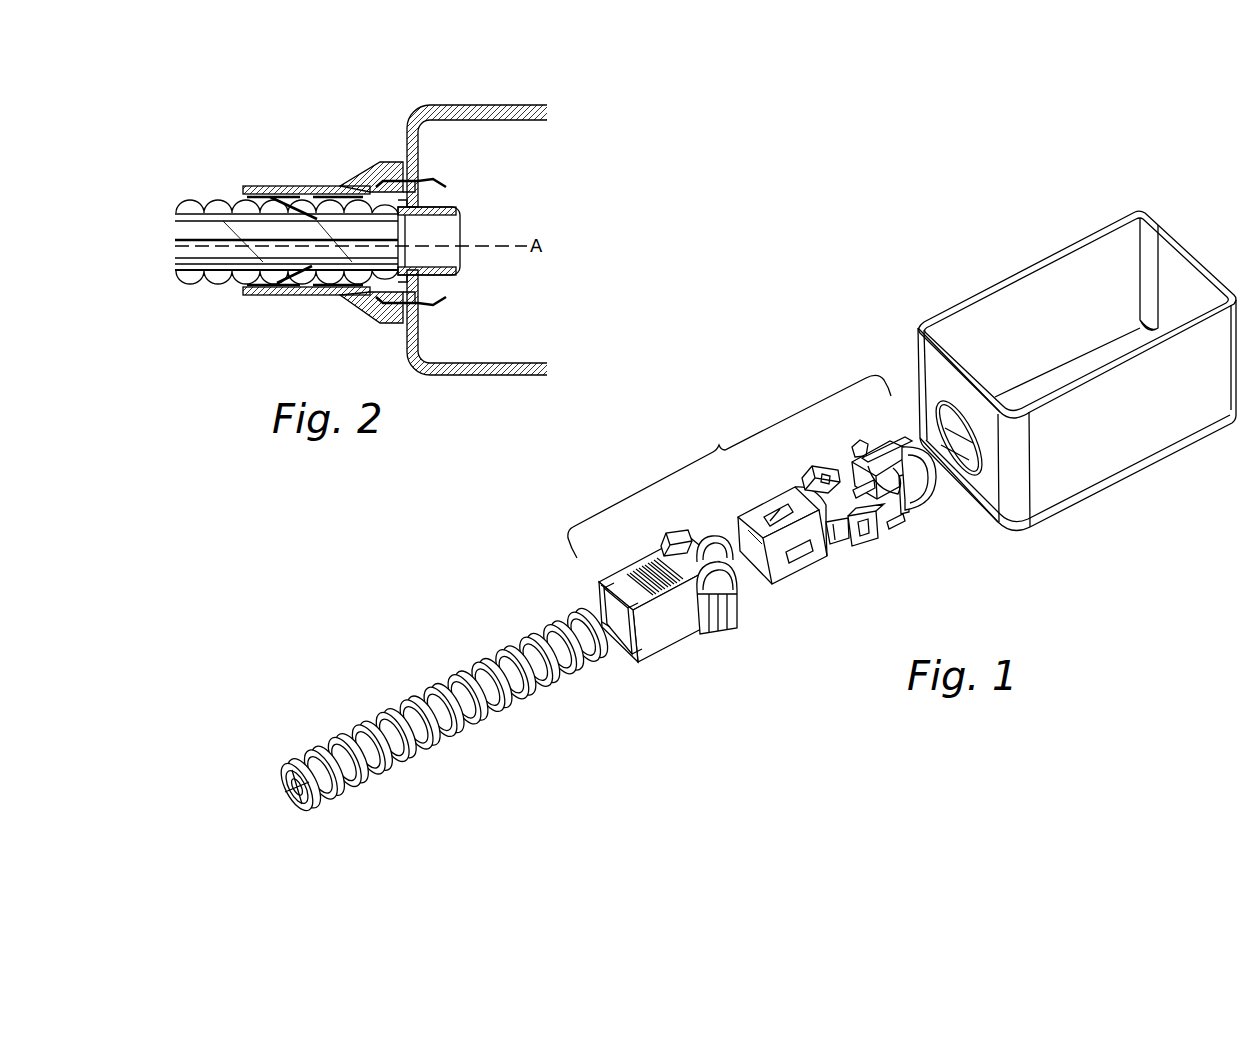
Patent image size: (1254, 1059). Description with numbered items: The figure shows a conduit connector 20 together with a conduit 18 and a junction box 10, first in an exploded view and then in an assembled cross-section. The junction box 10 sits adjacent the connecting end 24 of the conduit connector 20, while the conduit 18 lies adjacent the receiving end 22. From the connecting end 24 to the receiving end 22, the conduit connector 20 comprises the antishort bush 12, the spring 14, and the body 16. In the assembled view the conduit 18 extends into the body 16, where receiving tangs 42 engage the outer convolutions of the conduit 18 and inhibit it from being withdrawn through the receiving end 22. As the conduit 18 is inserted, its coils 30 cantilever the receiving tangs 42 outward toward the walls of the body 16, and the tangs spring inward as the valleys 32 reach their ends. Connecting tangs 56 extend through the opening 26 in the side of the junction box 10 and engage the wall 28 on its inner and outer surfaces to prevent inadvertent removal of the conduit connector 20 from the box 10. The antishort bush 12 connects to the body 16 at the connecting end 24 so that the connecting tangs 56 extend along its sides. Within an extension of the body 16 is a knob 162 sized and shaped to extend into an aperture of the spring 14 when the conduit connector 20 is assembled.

In FIG. 2, the junction box 10 is at (489, 105).
In FIG. 1, the junction box 10 is at (1133, 467).
In FIG. 1, the antishort bush 12 is at (915, 514).
In FIG. 1, the spring 14 is at (790, 576).
In FIG. 1, the body 16 is at (673, 646).
In FIG. 2, the conduit 18 is at (190, 256).
In FIG. 1, the conduit 18 is at (445, 710).
In FIG. 2, the conduit connector 20 is at (343, 306).
In FIG. 1, the conduit connector 20 is at (729, 466).
In FIG. 2, the receiving end 22 is at (243, 200).
In FIG. 1, the receiving end 22 is at (605, 606).
In FIG. 2, the connecting end 24 is at (461, 233).
In FIG. 1, the connecting end 24 is at (932, 470).
In FIG. 1, the opening 26 is at (956, 404).
In FIG. 1, the wall 28 is at (935, 380).
In FIG. 1, the coils 30 is at (403, 712).
In FIG. 1, the valleys 32 is at (386, 720).
In FIG. 2, the receiving tangs 42 is at (312, 198).
In FIG. 2, the connecting tangs 56 is at (446, 184).
In FIG. 2, the knob 162 is at (383, 186).